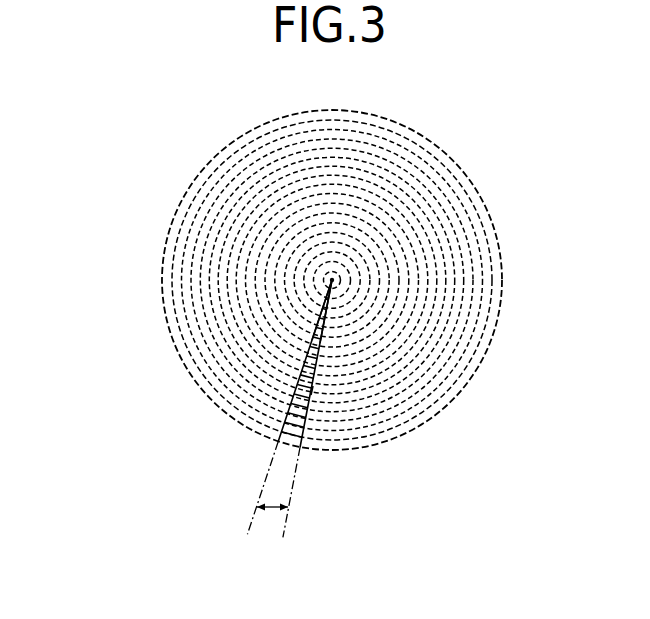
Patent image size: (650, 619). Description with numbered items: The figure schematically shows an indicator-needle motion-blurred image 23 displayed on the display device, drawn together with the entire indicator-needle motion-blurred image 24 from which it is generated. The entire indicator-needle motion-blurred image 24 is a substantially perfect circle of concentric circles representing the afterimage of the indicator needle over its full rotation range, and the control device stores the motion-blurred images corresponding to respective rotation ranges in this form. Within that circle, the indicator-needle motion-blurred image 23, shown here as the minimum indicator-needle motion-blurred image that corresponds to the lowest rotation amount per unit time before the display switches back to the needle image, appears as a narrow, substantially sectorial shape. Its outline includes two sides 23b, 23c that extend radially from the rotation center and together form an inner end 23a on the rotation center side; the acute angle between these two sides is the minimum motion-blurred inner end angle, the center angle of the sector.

The entire indicator-needle motion-blurred image 24 is at (462, 153).
The indicator-needle motion-blurred image 23 is at (300, 369).
The side of the minimum indicator-needle motion-blurred image 23c is at (305, 355).
The inner end 23a is at (347, 310).
The side of the minimum indicator-needle motion-blurred image 23b is at (312, 386).